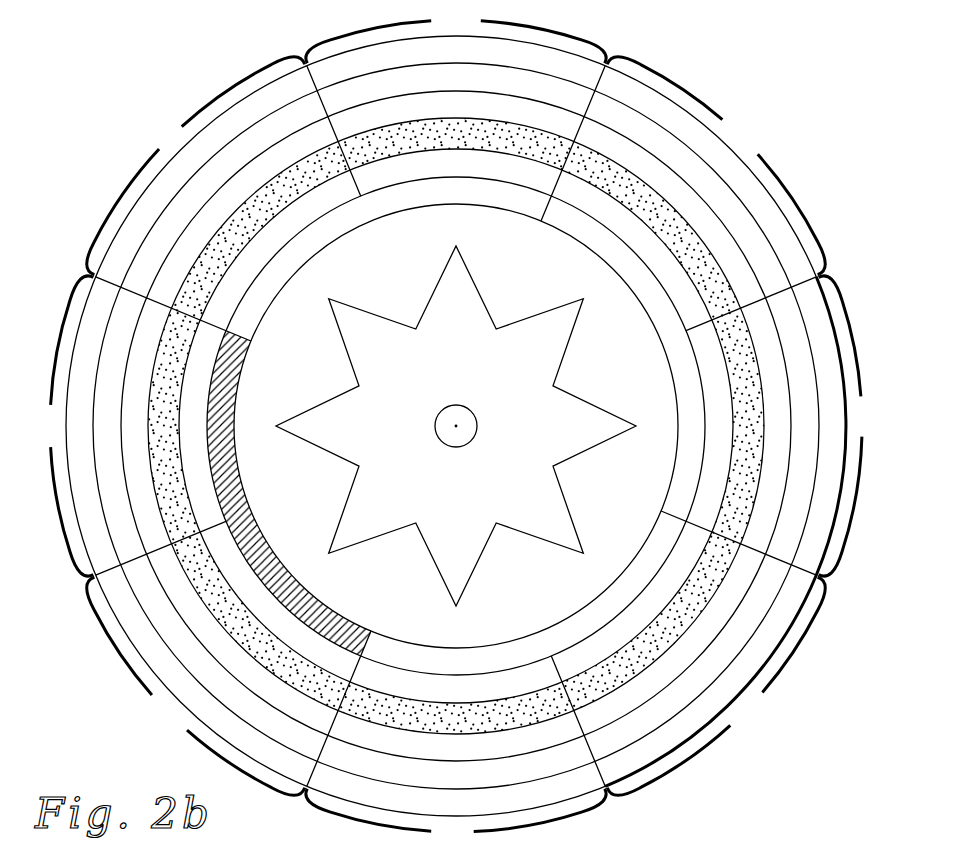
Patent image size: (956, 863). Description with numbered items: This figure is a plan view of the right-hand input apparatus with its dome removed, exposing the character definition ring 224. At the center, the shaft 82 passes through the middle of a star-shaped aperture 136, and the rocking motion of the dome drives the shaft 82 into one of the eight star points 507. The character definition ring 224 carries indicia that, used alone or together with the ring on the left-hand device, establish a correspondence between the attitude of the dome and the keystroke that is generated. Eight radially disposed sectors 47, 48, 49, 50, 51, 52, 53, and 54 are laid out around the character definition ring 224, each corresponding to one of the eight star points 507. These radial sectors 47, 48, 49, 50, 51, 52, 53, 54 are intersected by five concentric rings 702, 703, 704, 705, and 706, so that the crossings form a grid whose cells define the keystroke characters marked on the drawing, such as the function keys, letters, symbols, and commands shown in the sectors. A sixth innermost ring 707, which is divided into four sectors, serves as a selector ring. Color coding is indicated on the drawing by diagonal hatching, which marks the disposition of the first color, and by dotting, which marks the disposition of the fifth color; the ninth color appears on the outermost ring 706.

The character definition ring 224 is at (194, 78).
The radially disposed sector 47 is at (456, 33).
The radially disposed sector 48 is at (716, 166).
The radially disposed sector 49 is at (849, 426).
The radially disposed sector 50 is at (716, 686).
The radially disposed sector 51 is at (456, 822).
The radially disposed sector 52 is at (196, 686).
The radially disposed sector 53 is at (63, 426).
The radially disposed sector 54 is at (196, 166).
The star points 507 is at (456, 246).
The shaft 82 is at (470, 414).
The star-shaped aperture 136 is at (576, 412).
The sixth innermost ring 707 is at (684, 494).
The concentric ring 706 is at (430, 688).
The concentric ring 705 is at (371, 700).
The concentric ring 704 is at (383, 745).
The concentric ring 703 is at (532, 770).
The concentric ring 702 is at (380, 797).